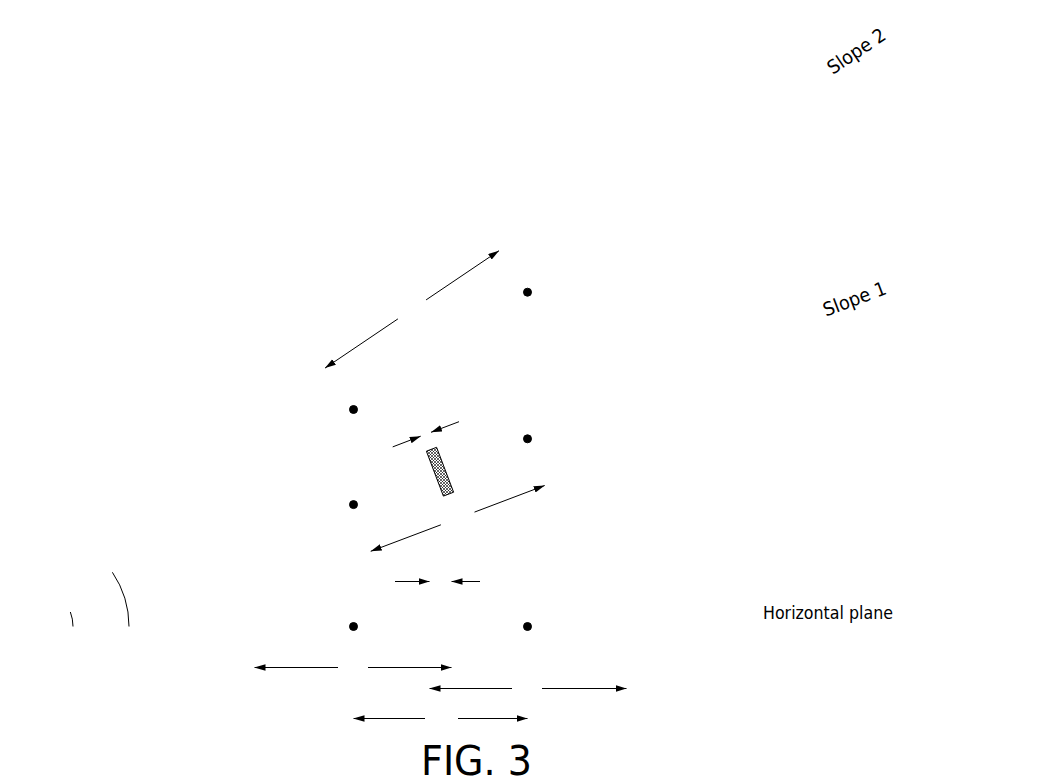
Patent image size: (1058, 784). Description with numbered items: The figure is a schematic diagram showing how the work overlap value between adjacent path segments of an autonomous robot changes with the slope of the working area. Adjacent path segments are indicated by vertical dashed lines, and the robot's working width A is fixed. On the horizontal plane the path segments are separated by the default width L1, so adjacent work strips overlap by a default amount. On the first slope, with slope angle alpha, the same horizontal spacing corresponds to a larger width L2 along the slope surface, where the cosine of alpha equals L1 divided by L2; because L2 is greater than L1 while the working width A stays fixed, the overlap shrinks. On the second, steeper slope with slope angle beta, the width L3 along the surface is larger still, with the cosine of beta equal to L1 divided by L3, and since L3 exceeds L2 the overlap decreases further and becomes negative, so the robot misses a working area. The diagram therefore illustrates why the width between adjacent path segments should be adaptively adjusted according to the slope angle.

The working width A is at (441, 678).
The width between adjacent path segments in the flat area L1 is at (441, 719).
The width between adjacent path segments in the area with the slope 1 L2 is at (458, 519).
The width between adjacent path segments in an area with the slope 2 L3 is at (412, 309).